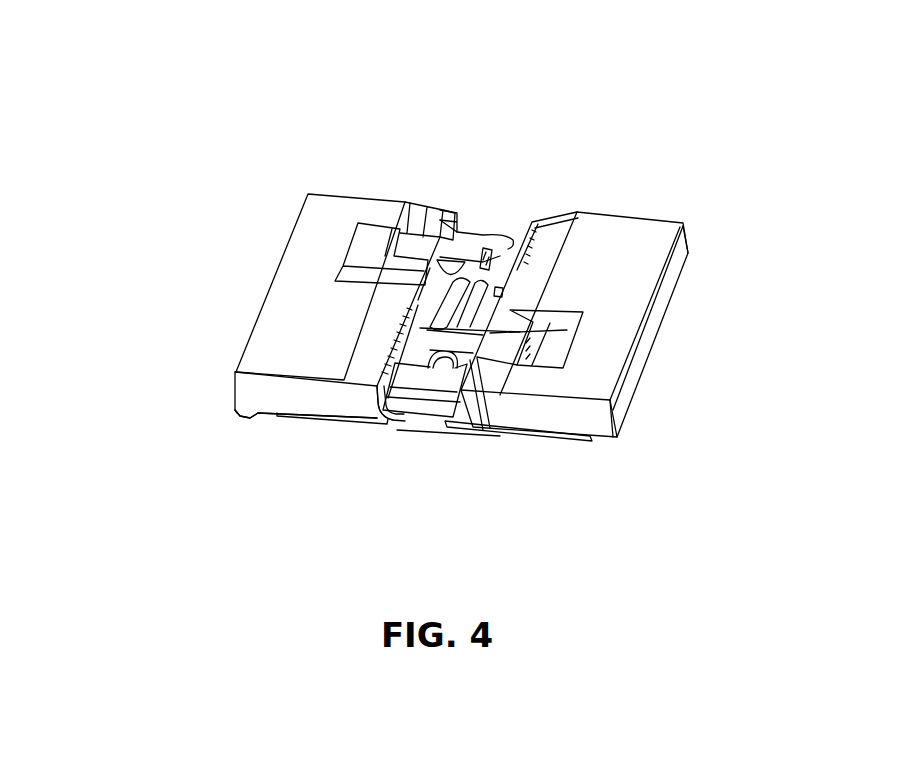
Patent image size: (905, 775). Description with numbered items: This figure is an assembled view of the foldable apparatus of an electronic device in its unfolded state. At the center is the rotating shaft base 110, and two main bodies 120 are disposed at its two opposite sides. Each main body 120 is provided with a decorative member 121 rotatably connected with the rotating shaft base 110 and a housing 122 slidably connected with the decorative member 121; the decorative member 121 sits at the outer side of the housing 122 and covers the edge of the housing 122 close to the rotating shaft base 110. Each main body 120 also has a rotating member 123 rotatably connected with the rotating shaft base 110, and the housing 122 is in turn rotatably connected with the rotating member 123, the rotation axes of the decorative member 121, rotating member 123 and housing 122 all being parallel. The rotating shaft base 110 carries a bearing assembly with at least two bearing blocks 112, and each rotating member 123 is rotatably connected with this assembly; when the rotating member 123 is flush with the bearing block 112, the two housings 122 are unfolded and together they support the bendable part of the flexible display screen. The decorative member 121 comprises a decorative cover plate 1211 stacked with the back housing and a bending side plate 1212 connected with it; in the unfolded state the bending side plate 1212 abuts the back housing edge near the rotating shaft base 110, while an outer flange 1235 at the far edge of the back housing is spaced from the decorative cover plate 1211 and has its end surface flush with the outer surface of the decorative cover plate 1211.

The rotating shaft base 110 is at (471, 273).
The bearing block 112 is at (485, 237).
The main body 120 is at (353, 152).
The decorative member 121 is at (305, 422).
The decorative cover plate 1211 is at (340, 425).
The bending side plate 1212 is at (397, 413).
The housing 122 is at (237, 383).
The rotating member 123 is at (423, 247).
The outer flange 1235 is at (237, 415).